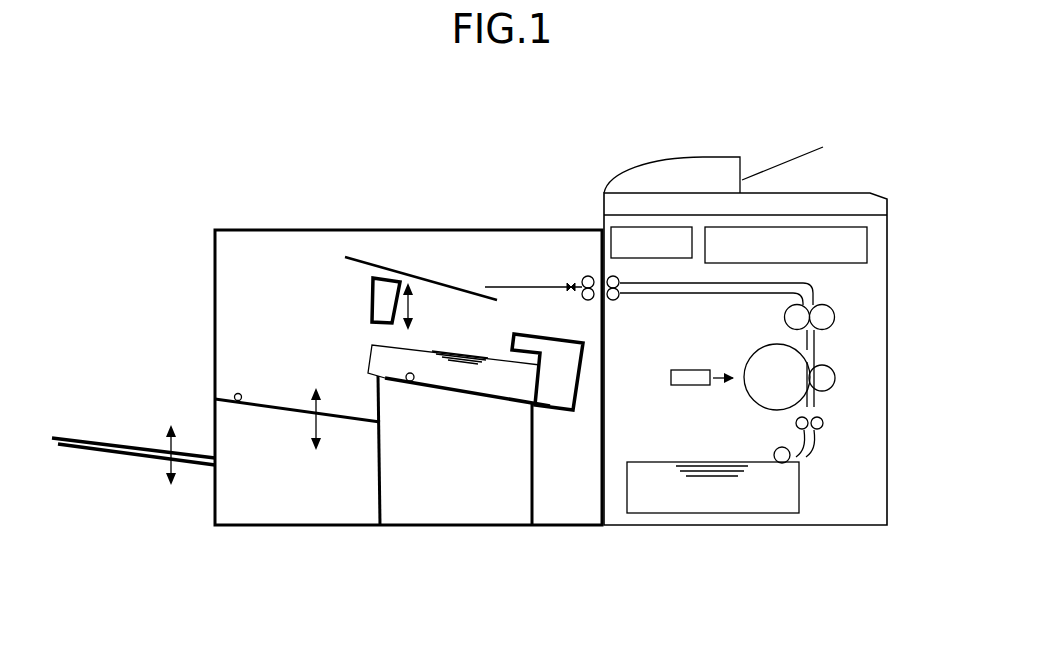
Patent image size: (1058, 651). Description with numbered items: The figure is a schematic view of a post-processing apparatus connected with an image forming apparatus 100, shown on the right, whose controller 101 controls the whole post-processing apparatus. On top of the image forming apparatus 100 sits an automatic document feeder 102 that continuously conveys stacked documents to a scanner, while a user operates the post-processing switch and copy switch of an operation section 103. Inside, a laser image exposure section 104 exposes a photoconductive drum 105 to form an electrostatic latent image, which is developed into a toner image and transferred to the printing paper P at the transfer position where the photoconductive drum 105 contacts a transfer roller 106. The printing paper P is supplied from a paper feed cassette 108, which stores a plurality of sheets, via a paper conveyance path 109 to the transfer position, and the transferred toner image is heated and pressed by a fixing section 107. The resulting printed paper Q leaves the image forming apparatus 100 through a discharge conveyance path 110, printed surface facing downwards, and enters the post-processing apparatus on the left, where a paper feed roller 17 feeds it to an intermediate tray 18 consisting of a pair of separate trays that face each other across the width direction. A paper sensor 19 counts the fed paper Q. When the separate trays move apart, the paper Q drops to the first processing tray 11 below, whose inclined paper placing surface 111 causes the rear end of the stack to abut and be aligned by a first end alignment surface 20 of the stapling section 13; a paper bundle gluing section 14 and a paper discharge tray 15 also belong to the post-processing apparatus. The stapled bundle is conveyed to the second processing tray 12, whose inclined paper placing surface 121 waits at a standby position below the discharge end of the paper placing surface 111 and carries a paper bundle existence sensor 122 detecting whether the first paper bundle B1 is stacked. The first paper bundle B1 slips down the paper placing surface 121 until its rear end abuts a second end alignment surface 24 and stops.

The image forming apparatus 100 is at (357, 189).
The controller 101 is at (867, 249).
The automatic document feeder (ADF) 102 is at (710, 157).
The operation section 103 is at (645, 253).
The laser image exposure section 104 is at (682, 385).
The photoconductive drum 105 is at (750, 385).
The transfer roller 106 is at (834, 380).
The fixing section 107 is at (832, 313).
The paper feed cassette 108 is at (737, 513).
The paper conveyance path 109 is at (815, 452).
The discharge conveyance path 110 is at (678, 295).
The first processing tray 11 is at (466, 352).
The paper placing surface 111 is at (411, 382).
The second processing tray 12 is at (283, 397).
The paper placing surface 121 is at (238, 401).
The paper bundle existence sensor 122 is at (360, 419).
The stapling section 13 is at (566, 411).
The paper bundle gluing section 14 is at (372, 287).
The paper discharge tray 15 is at (106, 439).
The paper feed roller 17 is at (588, 301).
The intermediate tray 18 is at (456, 288).
The paper sensor 19 is at (571, 282).
The first end alignment surface 20 is at (531, 384).
The second end alignment surface 24 is at (384, 405).
The printing paper P is at (678, 462).
The printed paper Q is at (539, 289).
The first paper bundle B1 is at (487, 383).